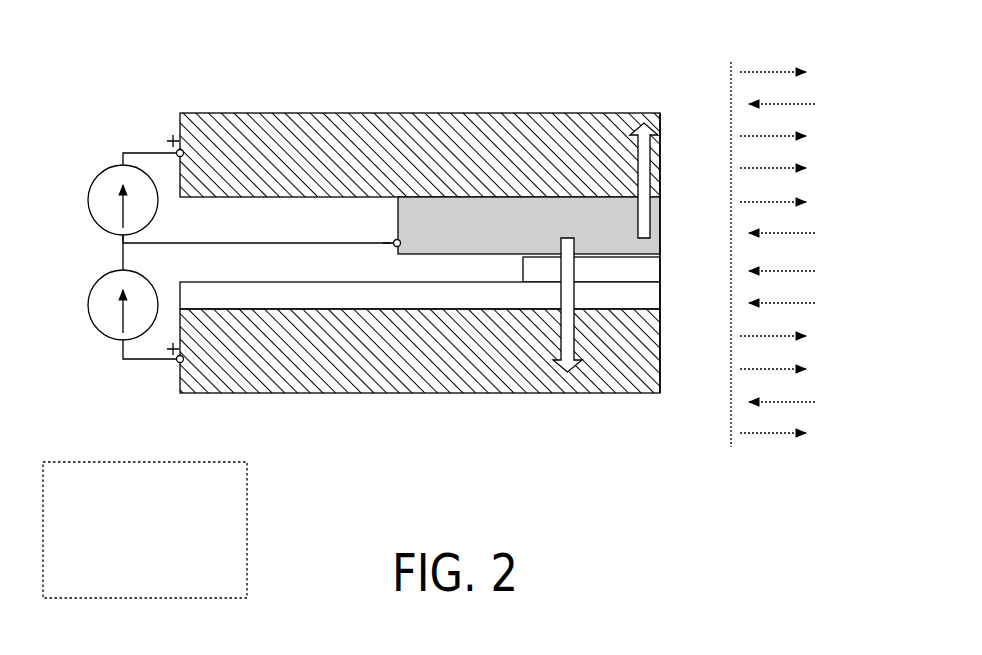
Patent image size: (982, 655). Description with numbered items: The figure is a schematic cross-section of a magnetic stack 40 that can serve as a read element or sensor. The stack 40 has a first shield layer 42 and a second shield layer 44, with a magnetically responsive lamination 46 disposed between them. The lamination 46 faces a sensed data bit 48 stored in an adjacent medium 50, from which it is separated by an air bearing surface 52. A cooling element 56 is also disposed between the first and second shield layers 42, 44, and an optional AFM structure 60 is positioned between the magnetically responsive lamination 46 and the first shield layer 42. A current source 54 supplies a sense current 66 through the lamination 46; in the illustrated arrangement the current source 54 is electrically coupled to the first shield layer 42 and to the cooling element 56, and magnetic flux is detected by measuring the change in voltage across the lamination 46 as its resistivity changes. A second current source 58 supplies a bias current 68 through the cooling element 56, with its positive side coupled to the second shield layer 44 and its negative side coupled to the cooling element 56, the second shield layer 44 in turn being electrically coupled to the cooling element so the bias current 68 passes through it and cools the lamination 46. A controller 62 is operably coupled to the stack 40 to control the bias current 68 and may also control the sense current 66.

The magnetic stack 40 is at (477, 42).
The first shield layer 42 is at (290, 394).
The second shield layer 44 is at (265, 113).
The magnetically responsive lamination 46 is at (522, 270).
The sensed data bit 48 is at (778, 435).
The medium 50 is at (765, 48).
The air bearing surface 52 is at (694, 350).
The current source 54 is at (92, 318).
The cooling element 56 is at (529, 225).
The current source 58 is at (115, 170).
The AFM structure 60 is at (420, 296).
The controller 62 is at (248, 478).
The sense current 66 is at (573, 238).
The bias current 68 is at (651, 165).